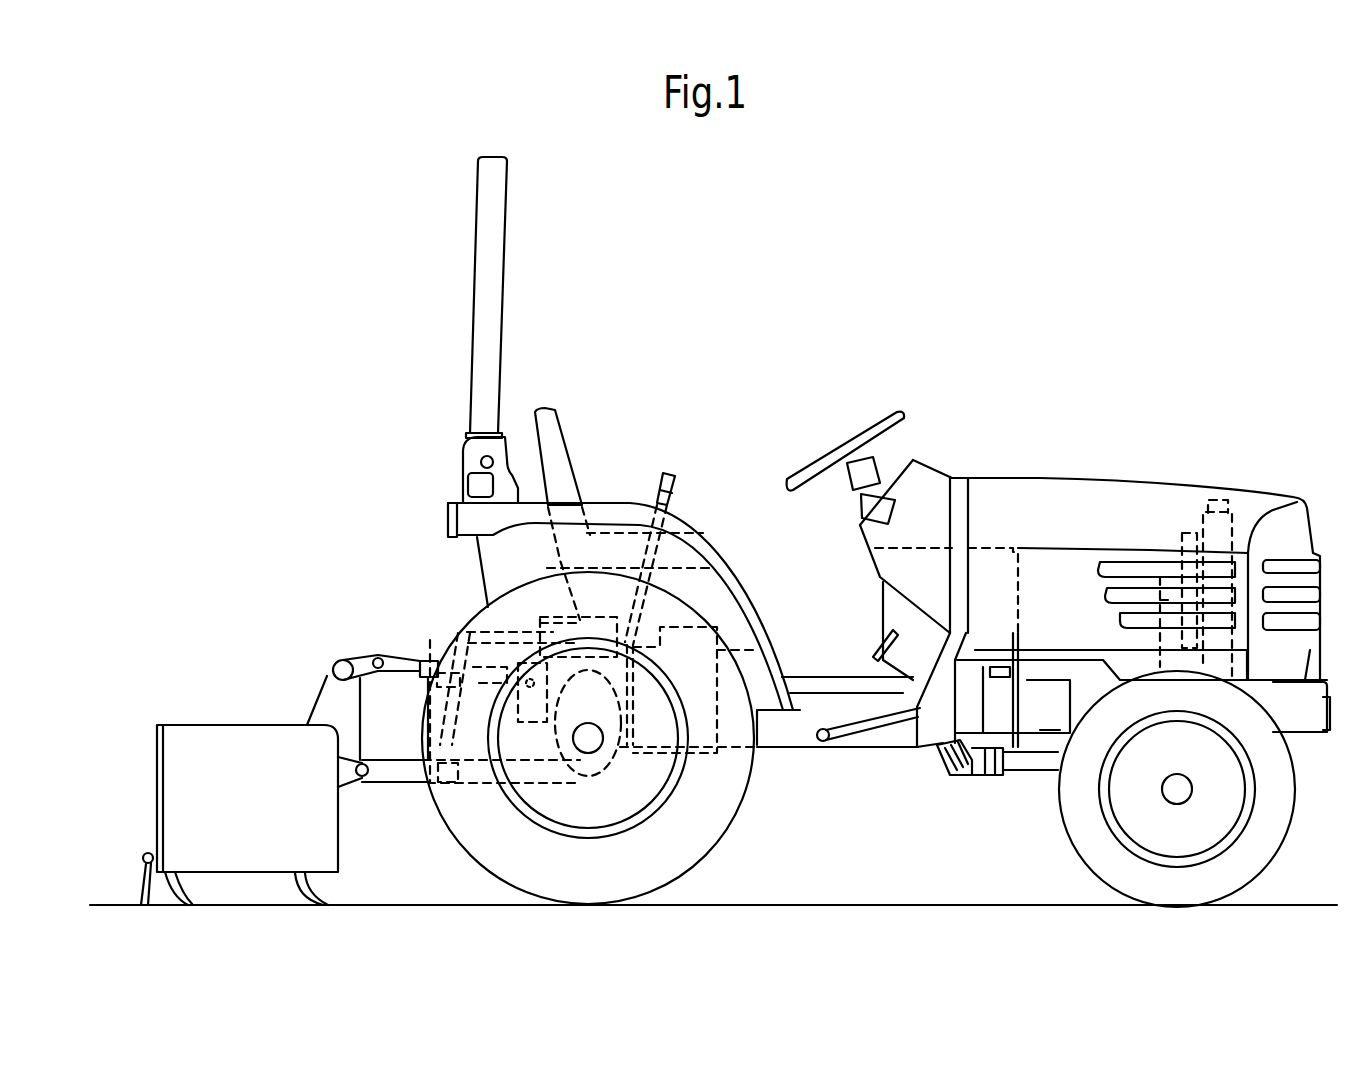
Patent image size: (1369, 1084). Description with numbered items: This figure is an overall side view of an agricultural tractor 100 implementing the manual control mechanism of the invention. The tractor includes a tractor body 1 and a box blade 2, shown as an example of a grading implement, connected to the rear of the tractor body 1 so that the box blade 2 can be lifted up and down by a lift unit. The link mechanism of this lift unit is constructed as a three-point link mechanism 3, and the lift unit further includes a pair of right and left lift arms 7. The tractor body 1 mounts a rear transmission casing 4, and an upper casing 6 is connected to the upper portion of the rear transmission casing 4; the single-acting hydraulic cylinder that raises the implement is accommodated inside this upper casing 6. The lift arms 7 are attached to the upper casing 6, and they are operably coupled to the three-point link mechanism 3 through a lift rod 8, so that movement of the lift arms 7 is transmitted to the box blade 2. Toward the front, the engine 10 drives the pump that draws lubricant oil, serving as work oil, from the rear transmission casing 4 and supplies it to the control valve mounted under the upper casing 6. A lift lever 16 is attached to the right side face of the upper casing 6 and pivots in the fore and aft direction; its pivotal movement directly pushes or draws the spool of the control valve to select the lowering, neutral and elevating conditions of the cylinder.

The working vehicle system (tractor with implement) 100 is at (399, 612).
The tractor body 1 is at (1028, 462).
The box blade 2 is at (220, 711).
The three-point link mechanism 3 is at (404, 800).
The rear transmission casing 4 is at (650, 750).
The upper casing 6 is at (552, 567).
The lift arms 7 is at (503, 637).
The lift rod 8 is at (428, 711).
The engine 10 is at (1090, 543).
The lift lever 16 is at (675, 488).